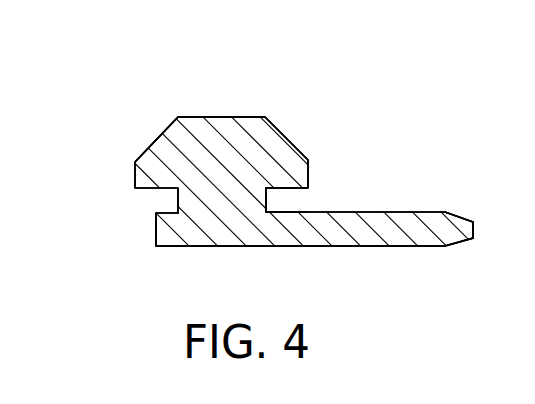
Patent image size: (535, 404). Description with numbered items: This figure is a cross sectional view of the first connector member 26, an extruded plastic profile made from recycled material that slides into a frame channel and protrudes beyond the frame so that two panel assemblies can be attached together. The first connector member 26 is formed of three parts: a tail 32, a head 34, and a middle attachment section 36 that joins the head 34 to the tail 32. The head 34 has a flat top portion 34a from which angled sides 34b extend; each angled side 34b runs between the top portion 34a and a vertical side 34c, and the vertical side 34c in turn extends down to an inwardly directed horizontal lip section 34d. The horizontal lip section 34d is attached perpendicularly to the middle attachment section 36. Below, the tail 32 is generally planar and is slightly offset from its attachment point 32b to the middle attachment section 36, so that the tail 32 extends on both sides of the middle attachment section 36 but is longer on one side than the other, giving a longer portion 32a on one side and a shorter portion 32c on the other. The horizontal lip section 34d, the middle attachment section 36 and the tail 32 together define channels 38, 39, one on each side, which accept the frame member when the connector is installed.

The first connector member 26 is at (324, 96).
The tail 32 is at (308, 236).
The longer portion 32a is at (444, 247).
The attachment point 32b is at (215, 246).
The shorter portion 32c is at (156, 233).
The head 34 is at (270, 145).
The flat top portion 34a is at (218, 117).
The angled sides 34b is at (160, 135).
The vertical side 34c is at (135, 174).
The horizontal lip section 34d is at (158, 189).
The middle attachment section 36 is at (267, 202).
The channel 38 is at (291, 205).
The channel 39 is at (157, 207).